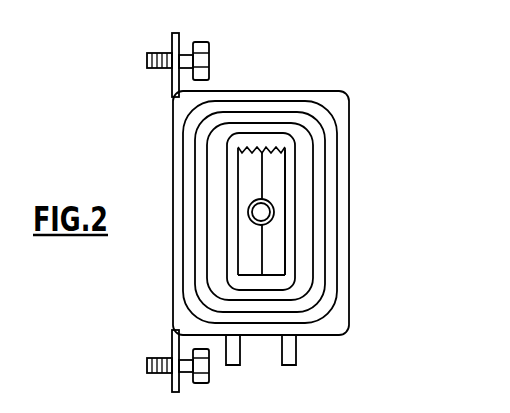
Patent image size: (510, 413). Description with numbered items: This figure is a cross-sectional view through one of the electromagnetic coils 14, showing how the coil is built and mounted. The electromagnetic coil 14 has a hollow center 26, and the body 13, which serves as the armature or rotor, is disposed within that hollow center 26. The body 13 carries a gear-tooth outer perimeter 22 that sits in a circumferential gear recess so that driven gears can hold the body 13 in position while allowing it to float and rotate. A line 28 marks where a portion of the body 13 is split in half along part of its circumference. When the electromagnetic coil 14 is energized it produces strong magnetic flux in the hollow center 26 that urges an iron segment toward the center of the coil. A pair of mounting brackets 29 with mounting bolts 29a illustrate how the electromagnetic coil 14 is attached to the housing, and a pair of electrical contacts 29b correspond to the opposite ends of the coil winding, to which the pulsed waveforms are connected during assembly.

The electromagnetic coil 14 is at (350, 230).
The gear-tooth outer perimeter 22 is at (271, 146).
The hollow center 26 is at (263, 150).
The body 13 is at (287, 163).
The split line 28 is at (264, 178).
The mounting bracket 29 is at (180, 39).
The mounting bolt 29a is at (209, 58).
The electrical contact 29b is at (240, 353).